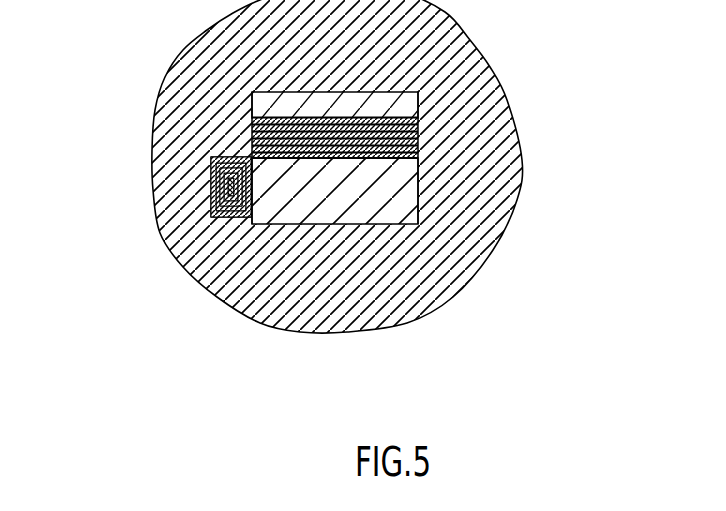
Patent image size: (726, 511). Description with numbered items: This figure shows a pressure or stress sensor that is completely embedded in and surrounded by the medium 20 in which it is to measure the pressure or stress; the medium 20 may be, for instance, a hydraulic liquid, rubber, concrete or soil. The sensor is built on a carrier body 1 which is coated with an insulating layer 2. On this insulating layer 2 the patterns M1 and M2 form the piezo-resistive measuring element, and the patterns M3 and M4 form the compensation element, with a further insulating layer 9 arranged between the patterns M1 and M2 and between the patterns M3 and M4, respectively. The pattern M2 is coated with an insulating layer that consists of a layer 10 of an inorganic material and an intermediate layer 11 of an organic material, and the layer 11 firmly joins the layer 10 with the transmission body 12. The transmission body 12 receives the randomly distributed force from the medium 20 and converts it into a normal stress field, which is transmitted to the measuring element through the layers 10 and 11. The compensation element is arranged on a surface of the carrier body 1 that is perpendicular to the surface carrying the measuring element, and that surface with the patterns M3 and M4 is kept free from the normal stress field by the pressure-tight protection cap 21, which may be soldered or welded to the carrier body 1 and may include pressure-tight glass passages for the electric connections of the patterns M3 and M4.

The carrier body 1 is at (387, 187).
The insulating layer 2 is at (247, 156).
The insulating layer 9 is at (250, 134).
The layer of inorganic material 10 is at (250, 127).
The intermediate layer of organic material 11 is at (400, 119).
The transmission body 12 is at (396, 102).
The medium 20 is at (423, 273).
The pressure-tight protection cap 21 is at (212, 210).
The pattern M1 is at (400, 152).
The pattern M2 is at (400, 133).
The pattern M3 is at (243, 218).
The pattern M4 is at (211, 216).